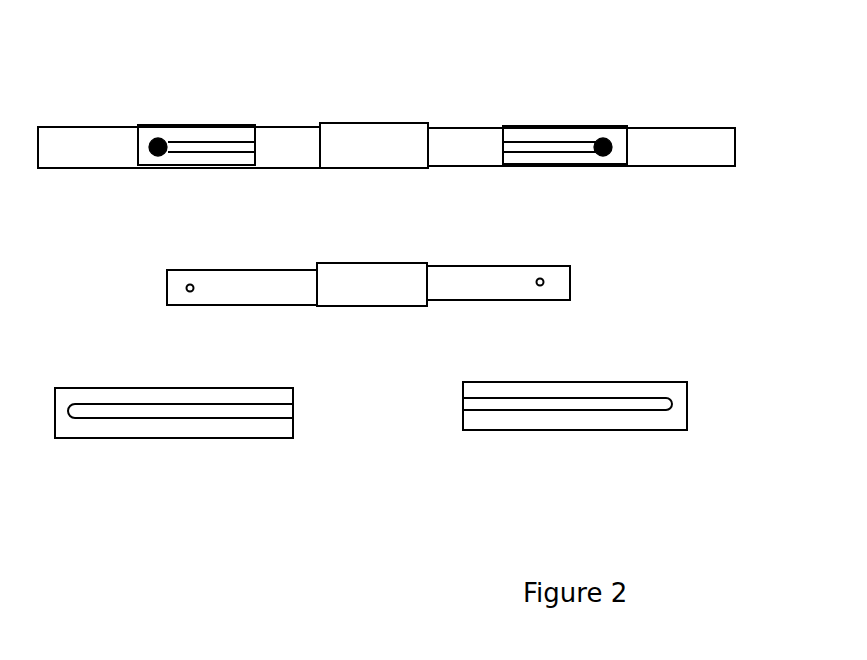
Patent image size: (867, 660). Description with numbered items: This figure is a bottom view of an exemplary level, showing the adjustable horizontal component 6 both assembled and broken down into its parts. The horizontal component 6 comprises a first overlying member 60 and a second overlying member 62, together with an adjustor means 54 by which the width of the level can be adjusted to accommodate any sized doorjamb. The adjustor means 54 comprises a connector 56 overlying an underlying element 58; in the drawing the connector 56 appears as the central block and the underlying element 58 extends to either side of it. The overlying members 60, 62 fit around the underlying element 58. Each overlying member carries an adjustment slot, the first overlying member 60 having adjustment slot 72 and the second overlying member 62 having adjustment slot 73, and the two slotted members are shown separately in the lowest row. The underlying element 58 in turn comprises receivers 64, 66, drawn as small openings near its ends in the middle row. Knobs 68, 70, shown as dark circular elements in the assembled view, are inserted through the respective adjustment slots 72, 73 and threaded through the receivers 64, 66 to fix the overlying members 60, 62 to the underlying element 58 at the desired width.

The horizontal component 6 is at (722, 75).
The adjustor means 54 is at (458, 122).
The connector 56 is at (380, 133).
The underlying element 58 is at (278, 140).
The first overlying member 60 is at (57, 135).
The second overlying member 62 is at (682, 133).
The receiver 64 is at (188, 286).
The receiver 66 is at (544, 281).
The knob 68 is at (155, 134).
The knob 70 is at (605, 144).
The adjustment slot 72 is at (222, 410).
The adjustment slot 73 is at (533, 405).